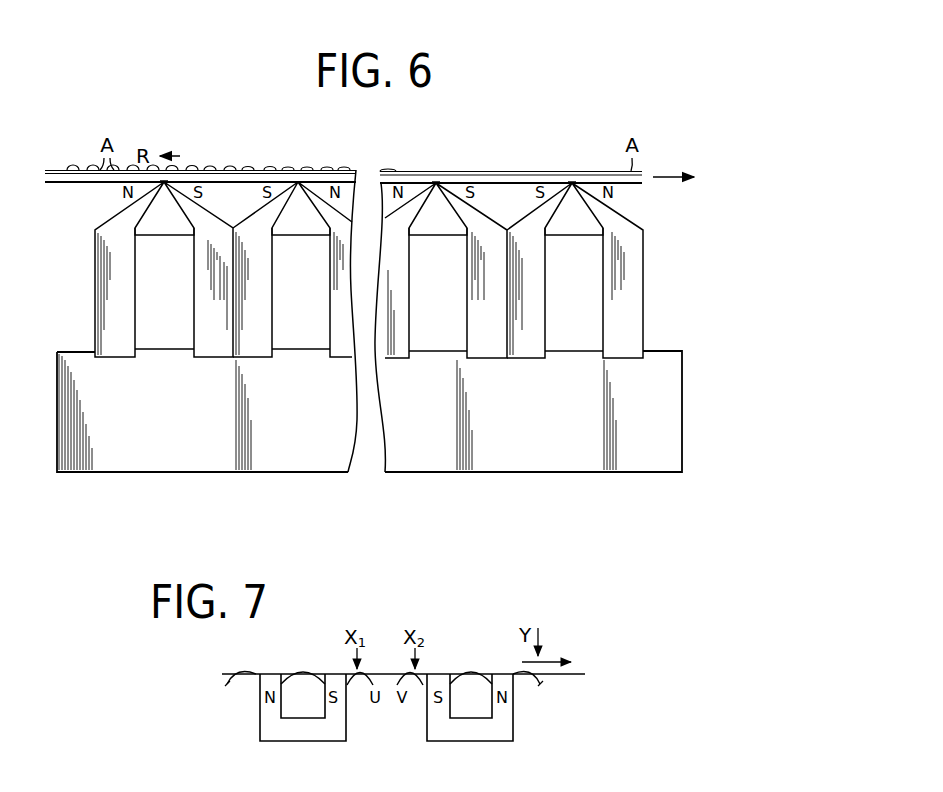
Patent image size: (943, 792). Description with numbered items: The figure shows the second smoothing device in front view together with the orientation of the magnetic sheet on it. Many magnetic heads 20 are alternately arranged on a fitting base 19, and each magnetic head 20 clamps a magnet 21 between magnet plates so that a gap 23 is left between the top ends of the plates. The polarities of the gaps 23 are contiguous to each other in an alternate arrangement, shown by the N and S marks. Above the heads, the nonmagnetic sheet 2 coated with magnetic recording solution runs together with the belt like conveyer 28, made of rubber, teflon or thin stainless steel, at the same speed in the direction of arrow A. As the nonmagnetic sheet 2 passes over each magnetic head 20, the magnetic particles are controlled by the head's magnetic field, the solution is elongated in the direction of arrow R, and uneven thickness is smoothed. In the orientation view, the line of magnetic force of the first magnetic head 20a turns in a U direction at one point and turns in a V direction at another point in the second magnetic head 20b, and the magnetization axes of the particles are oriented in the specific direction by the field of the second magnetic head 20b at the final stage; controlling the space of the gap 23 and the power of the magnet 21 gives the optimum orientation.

In FIG. 6, the nonmagnetic sheet 2 is at (57, 171).
In FIG. 7, the nonmagnetic sheet 2 is at (497, 672).
In FIG. 6, the fitting base 19 is at (175, 465).
In FIG. 6, the magnetic head 20 is at (282, 188).
In FIG. 7, the first magnetic head 20a is at (347, 728).
In FIG. 7, the second magnetic head 20b is at (514, 728).
In FIG. 6, the magnet 21 is at (155, 302).
In FIG. 6, the gap 23 is at (300, 182).
In FIG. 6, the belt like conveyer 28 is at (79, 184).